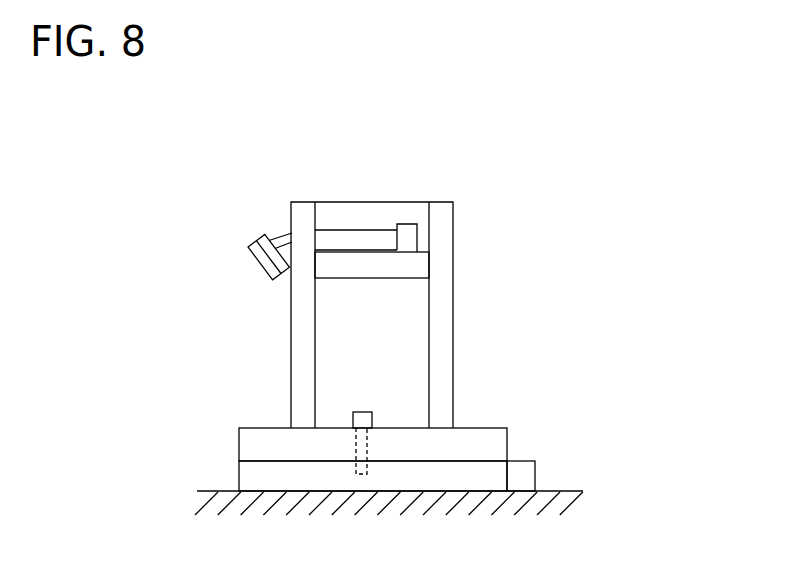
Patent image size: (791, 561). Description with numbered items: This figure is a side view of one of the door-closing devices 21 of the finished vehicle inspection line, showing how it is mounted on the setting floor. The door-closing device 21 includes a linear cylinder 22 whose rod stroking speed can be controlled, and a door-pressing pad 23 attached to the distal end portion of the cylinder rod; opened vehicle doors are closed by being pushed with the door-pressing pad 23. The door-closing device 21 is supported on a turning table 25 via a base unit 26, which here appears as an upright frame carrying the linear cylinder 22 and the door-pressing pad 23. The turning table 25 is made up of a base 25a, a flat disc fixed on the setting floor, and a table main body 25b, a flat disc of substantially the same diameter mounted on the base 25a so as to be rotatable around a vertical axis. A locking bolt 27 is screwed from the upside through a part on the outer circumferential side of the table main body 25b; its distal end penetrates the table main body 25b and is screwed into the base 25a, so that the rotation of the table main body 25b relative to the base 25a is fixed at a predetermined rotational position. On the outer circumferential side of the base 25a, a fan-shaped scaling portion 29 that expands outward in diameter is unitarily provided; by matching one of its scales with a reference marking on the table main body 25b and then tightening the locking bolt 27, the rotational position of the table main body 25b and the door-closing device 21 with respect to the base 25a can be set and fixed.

The door-closing device 21 is at (363, 266).
The linear cylinder 22 is at (373, 226).
The door-pressing pad 23 is at (246, 238).
The turning table 25 is at (302, 445).
The base 25a is at (247, 477).
The table main body 25b is at (247, 443).
The base unit 26 is at (467, 308).
The locking bolt 27 is at (363, 420).
The scaling portion 29 is at (525, 477).